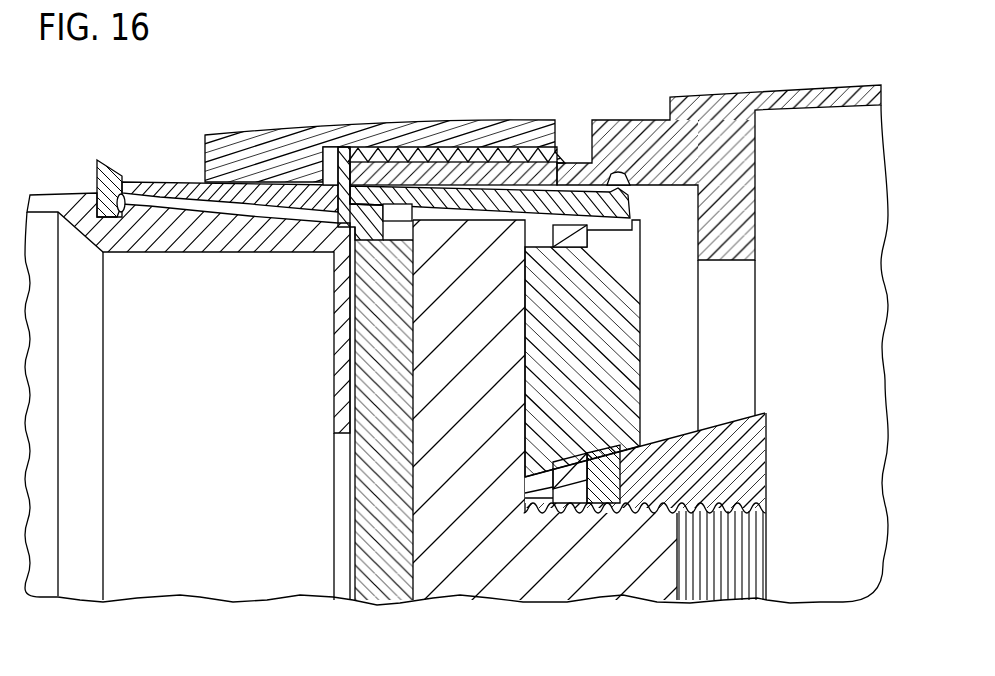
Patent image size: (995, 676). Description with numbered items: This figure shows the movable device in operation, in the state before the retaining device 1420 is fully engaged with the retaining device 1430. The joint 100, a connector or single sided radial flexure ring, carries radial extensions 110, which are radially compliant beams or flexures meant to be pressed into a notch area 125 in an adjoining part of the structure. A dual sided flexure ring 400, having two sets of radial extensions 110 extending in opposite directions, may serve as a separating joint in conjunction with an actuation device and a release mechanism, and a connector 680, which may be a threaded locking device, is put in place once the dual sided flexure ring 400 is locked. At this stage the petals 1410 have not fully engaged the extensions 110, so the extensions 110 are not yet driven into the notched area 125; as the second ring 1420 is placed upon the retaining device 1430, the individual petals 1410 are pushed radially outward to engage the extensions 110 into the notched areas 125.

The joint 100 is at (808, 86).
The radial extensions 110 is at (175, 181).
The notch area 125 is at (112, 217).
The dual sided flexure ring 400 is at (380, 573).
The connector 680 is at (303, 126).
The petals 1410 is at (615, 355).
The retaining device 1420 is at (742, 449).
The retaining device 1430 is at (565, 573).